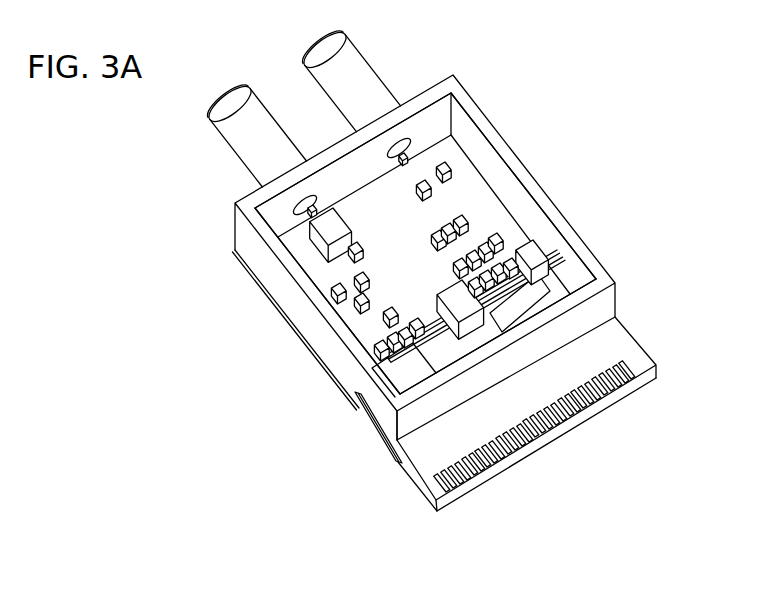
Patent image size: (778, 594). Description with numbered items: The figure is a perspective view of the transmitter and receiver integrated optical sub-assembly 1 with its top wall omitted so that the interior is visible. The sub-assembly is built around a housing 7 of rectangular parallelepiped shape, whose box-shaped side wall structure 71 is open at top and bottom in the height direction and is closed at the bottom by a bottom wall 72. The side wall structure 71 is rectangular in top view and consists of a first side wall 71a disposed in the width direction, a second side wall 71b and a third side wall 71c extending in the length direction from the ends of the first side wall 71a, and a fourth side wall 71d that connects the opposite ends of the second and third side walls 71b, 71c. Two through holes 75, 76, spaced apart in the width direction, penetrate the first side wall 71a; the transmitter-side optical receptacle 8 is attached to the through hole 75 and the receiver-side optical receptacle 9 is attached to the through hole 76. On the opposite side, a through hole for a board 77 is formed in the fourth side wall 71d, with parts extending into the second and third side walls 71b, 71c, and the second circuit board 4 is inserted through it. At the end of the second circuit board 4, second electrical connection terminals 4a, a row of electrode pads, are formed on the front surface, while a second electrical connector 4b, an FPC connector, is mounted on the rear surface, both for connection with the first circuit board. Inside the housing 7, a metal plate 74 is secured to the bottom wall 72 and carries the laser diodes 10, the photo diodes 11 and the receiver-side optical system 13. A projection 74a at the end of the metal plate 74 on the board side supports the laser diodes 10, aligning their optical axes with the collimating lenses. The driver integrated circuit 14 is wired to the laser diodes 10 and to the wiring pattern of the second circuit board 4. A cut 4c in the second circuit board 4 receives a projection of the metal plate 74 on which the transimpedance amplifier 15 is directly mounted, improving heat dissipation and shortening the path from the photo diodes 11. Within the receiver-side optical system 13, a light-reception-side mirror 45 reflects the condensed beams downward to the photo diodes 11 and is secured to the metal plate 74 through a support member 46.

The transmitter and receiver integrated optical sub-assembly 1 is at (604, 90).
The second circuit board 4 is at (620, 350).
The second electrical connection terminals 4a is at (657, 363).
The second electrical connector 4b is at (432, 504).
The cut 4c is at (545, 312).
The housing 7 is at (570, 153).
The transmitter-side optical receptacle 8 is at (243, 138).
The receiver-side optical receptacle 9 is at (353, 70).
The laser diodes 10 is at (410, 375).
The photo diodes 11 is at (552, 255).
The receiver-side optical system 13 is at (486, 200).
The driver integrated circuit 14 is at (360, 398).
The transimpedance amplifier 15 is at (588, 288).
The light-reception-side mirror 45 is at (565, 262).
The support member 46 is at (538, 245).
The side wall structure 71 is at (462, 82).
The first side wall 71a is at (323, 147).
The second side wall 71b is at (258, 255).
The third side wall 71c is at (480, 123).
The fourth side wall 71d is at (470, 435).
The bottom wall 72 is at (375, 437).
The metal plate 74 is at (347, 308).
The projection 74a is at (488, 343).
The through hole 75 is at (293, 205).
The through hole 76 is at (398, 138).
The through hole for a board 77 is at (405, 455).